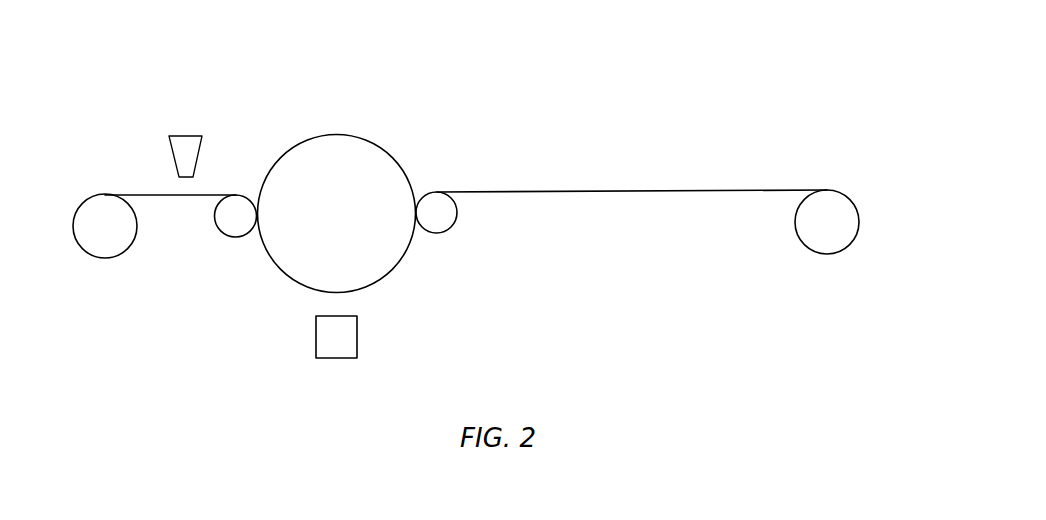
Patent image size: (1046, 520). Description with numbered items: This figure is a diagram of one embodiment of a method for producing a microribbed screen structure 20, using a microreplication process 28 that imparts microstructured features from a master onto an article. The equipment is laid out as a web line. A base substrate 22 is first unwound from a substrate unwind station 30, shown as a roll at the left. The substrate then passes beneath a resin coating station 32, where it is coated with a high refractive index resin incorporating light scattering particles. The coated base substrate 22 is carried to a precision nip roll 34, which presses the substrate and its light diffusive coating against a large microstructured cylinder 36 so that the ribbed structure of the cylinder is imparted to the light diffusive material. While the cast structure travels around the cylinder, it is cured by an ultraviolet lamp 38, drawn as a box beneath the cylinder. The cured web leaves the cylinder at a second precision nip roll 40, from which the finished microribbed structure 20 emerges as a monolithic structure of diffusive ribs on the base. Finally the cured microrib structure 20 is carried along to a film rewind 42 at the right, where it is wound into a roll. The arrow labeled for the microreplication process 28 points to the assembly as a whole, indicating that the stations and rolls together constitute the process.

The screen structure 20 is at (487, 191).
The base substrate 22 is at (137, 194).
The microreplication process 28 is at (392, 78).
The substrate unwind station 30 is at (97, 238).
The resin coating station 32 is at (183, 135).
The precision nip roll 34 is at (214, 224).
The microstructured cylinder 36 is at (325, 134).
The ultraviolet lamp 38 is at (364, 337).
The precision nip roll 40 is at (438, 222).
The film rewind 42 is at (841, 191).